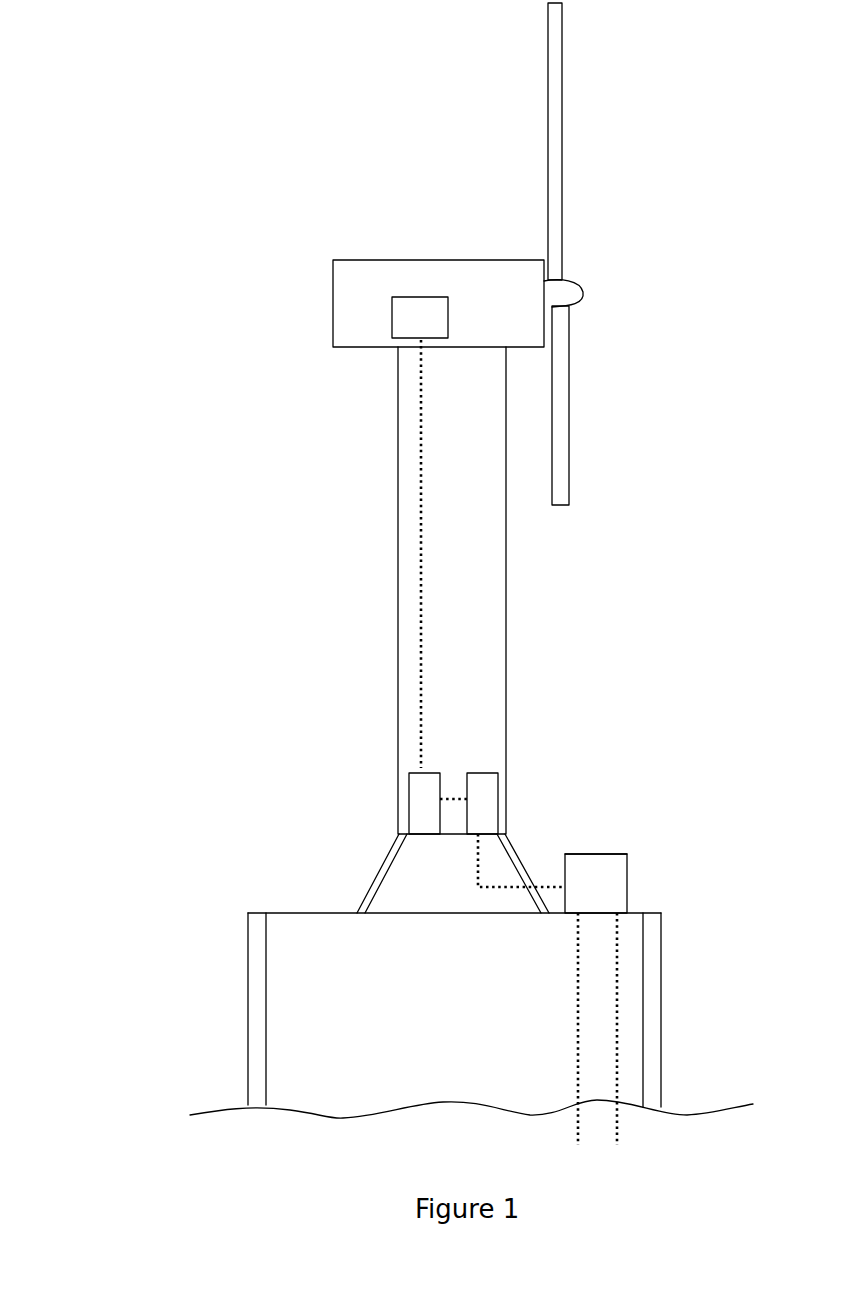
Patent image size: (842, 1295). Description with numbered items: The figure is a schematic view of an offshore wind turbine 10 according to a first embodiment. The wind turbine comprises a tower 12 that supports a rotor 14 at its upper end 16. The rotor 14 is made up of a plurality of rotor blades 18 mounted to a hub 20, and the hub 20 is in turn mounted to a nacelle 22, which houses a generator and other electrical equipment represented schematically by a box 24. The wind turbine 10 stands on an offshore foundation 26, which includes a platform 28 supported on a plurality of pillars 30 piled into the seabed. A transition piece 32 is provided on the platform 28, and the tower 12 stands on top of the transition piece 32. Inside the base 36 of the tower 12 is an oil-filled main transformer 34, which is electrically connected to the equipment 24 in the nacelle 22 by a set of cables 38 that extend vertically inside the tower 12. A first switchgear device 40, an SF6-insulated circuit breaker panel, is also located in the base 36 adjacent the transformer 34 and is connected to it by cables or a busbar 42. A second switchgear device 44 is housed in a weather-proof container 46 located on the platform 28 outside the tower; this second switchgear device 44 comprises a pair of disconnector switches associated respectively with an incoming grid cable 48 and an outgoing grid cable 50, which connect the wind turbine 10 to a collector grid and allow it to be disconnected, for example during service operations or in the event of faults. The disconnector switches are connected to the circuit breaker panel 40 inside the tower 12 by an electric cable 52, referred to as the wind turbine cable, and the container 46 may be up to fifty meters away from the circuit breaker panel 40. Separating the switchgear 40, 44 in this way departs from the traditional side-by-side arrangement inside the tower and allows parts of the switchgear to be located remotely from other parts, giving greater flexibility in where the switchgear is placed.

The offshore wind turbine 10 is at (207, 499).
The tower 12 is at (507, 651).
The rotor 14 is at (653, 302).
The upper end 16 is at (371, 379).
The rotor blades 18 is at (556, 46).
The hub 20 is at (569, 292).
The nacelle 22 is at (380, 260).
The generator and other electrical equipment 24 is at (450, 317).
The offshore foundation 26 is at (124, 1001).
The platform 28 is at (293, 912).
The pillars 30 is at (262, 1061).
The transition piece 32 is at (388, 852).
The oil-filled main transformer 34 is at (418, 787).
The base of the tower 36 is at (565, 801).
The set of cables 38 is at (423, 541).
The first switchgear device 40 is at (485, 775).
The cables or busbar 42 is at (448, 793).
The second switchgear device 44 is at (630, 885).
The weather-proof container 46 is at (607, 853).
The incoming grid cable 48 is at (578, 962).
The outgoing grid cable 50 is at (618, 992).
The electric cable 52 is at (474, 864).